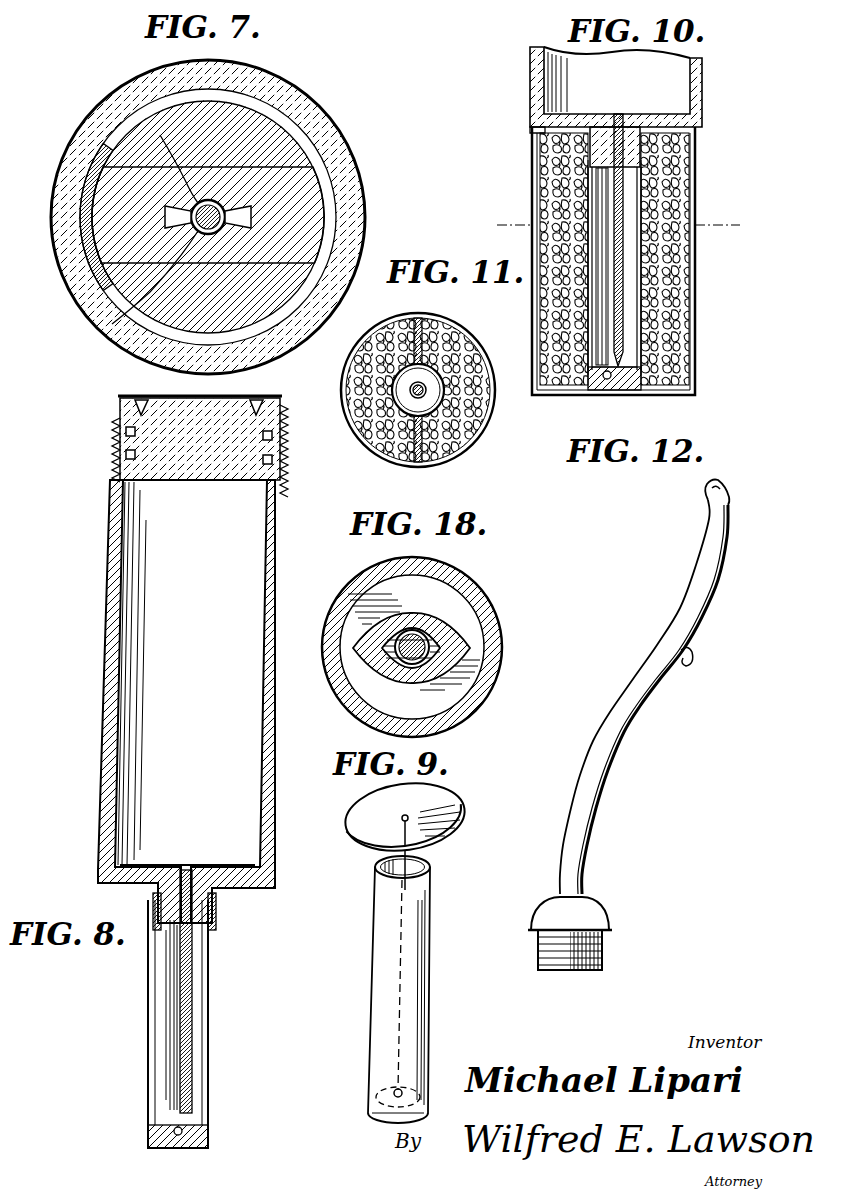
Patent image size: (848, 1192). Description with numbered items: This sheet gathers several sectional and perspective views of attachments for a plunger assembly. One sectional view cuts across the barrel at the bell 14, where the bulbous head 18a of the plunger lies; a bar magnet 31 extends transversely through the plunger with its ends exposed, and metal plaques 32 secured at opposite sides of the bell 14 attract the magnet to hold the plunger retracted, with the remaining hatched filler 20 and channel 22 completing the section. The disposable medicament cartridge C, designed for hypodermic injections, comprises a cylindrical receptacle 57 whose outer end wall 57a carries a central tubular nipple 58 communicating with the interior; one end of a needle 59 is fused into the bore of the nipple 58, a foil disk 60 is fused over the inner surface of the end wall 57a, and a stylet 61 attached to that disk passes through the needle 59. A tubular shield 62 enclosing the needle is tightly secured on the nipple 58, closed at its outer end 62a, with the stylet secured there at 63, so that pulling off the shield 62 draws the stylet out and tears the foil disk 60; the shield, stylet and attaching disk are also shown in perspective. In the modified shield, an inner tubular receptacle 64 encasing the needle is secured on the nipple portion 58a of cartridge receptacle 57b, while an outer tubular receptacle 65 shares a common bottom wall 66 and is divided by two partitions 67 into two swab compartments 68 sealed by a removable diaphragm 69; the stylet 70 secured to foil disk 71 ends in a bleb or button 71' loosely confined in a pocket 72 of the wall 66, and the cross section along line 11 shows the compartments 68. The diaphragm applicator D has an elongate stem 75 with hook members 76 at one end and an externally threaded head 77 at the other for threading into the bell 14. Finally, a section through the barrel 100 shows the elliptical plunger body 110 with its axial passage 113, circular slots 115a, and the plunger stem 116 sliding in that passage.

In FIG. 7, the bell 14 is at (302, 105).
In FIG. 7, the bulbous head 18a is at (250, 100).
In FIG. 7, the filler disc 20 is at (104, 326).
In FIG. 7, the central channel 22 is at (160, 135).
In FIG. 7, the bar magnet 31 is at (128, 185).
In FIG. 7, the metal plaques 32 is at (343, 185).
In FIG. 8, the cylindrical receptacle 57 is at (104, 688).
In FIG. 8, the end wall 57a is at (232, 886).
In FIG. 10, the cartridge receptacle 57b is at (702, 96).
In FIG. 8, the tubular nipple 58 is at (156, 898).
In FIG. 10, the nipple portion 58a is at (643, 160).
In FIG. 8, the needle 59 is at (193, 1006).
In FIG. 9, the foil disk 60 is at (462, 809).
In FIG. 8, the foil disk 60 is at (142, 866).
In FIG. 9, the stylet 61 is at (431, 866).
In FIG. 8, the stylet 61 is at (190, 1040).
In FIG. 9, the tubular shield 62 is at (430, 993).
In FIG. 8, the tubular shield 62 is at (208, 1085).
In FIG. 9, the closed outer end 62a is at (395, 1121).
In FIG. 8, the closed outer end 62a is at (200, 1150).
In FIG. 9, the stylet attachment 63 is at (385, 1098).
In FIG. 8, the stylet attachment 63 is at (190, 1127).
In FIG. 10, the inner tubular receptacle 64 is at (645, 357).
In FIG. 11, the inner tubular receptacle 64 is at (393, 386).
In FIG. 10, the outer tubular receptacle 65 is at (704, 300).
In FIG. 11, the outer tubular receptacle 65 is at (478, 451).
In FIG. 10, the common bottom wall 66 is at (534, 396).
In FIG. 11, the partitions 67 is at (411, 315).
In FIG. 10, the swab compartments 68 is at (552, 166).
In FIG. 11, the swab compartments 68 is at (462, 348).
In FIG. 10, the removable diaphragm 69 is at (531, 127).
In FIG. 10, the stylet 70 is at (624, 338).
In FIG. 10, the foil disk 71 is at (598, 217).
In FIG. 10, the bleb or button 71' is at (613, 392).
In FIG. 10, the pocket 72 is at (620, 396).
In FIG. 12, the elongate stem 75 is at (580, 781).
In FIG. 12, the hook members 76 is at (716, 480).
In FIG. 12, the screw threaded head 77 is at (604, 953).
In FIG. 18, the elongate barrel 100 is at (481, 587).
In FIG. 18, the plunger body 110 is at (458, 632).
In FIG. 18, the axial passage 113 is at (405, 662).
In FIG. 18, the circular slots 115a is at (411, 622).
In FIG. 18, the plunger stem 116 is at (418, 662).
In FIG. 10, the section line 11— 11 is at (515, 218).
In FIG. 8, the disposable medicament cartridge C is at (100, 650).
In FIG. 12, the diaphragm applicator D is at (587, 729).